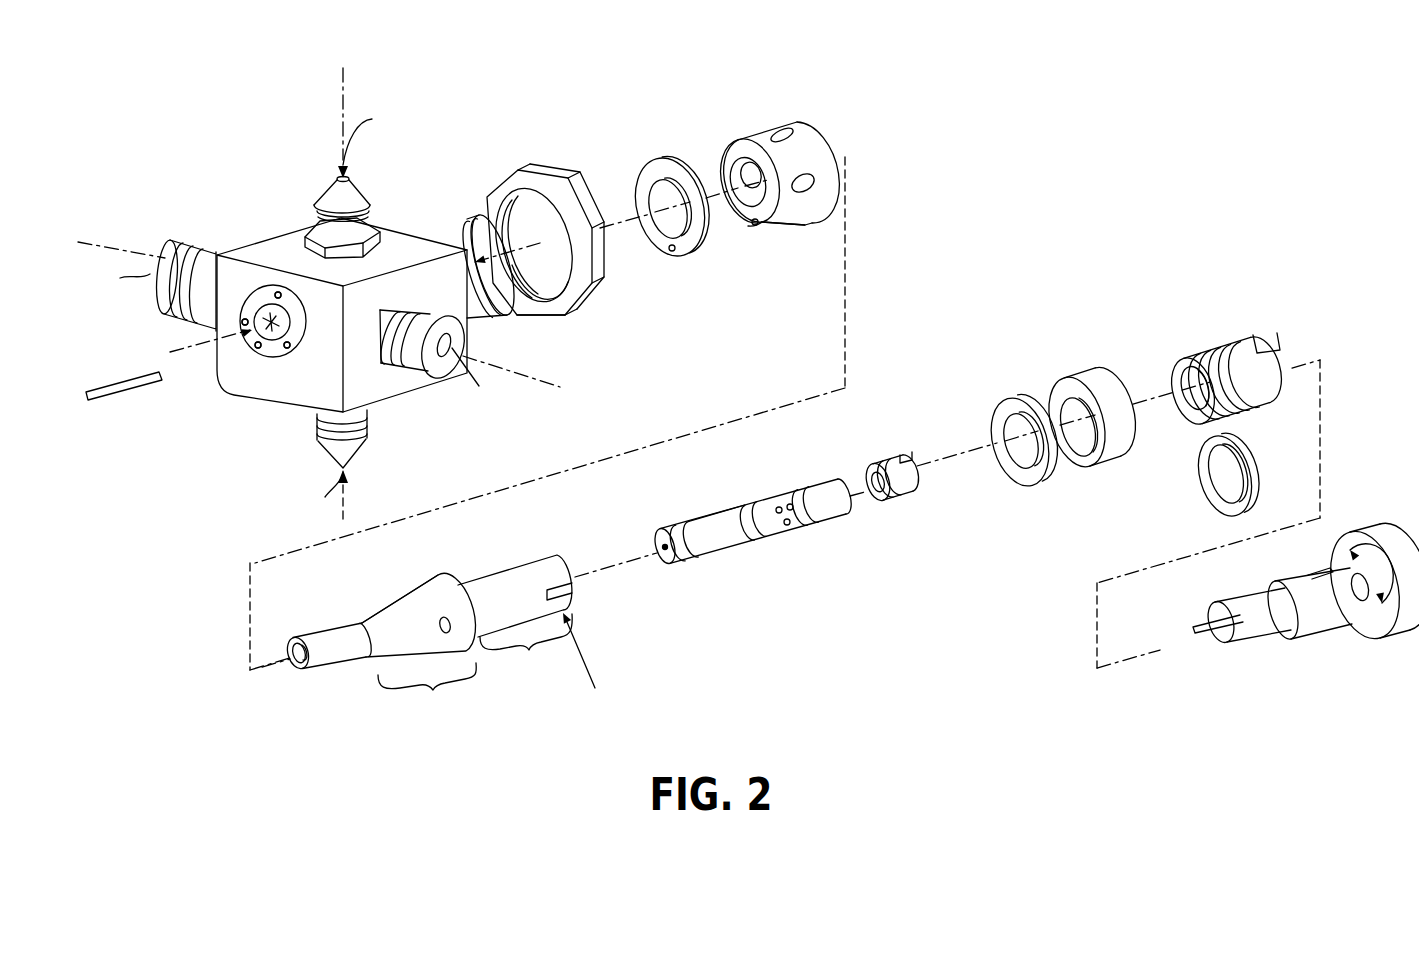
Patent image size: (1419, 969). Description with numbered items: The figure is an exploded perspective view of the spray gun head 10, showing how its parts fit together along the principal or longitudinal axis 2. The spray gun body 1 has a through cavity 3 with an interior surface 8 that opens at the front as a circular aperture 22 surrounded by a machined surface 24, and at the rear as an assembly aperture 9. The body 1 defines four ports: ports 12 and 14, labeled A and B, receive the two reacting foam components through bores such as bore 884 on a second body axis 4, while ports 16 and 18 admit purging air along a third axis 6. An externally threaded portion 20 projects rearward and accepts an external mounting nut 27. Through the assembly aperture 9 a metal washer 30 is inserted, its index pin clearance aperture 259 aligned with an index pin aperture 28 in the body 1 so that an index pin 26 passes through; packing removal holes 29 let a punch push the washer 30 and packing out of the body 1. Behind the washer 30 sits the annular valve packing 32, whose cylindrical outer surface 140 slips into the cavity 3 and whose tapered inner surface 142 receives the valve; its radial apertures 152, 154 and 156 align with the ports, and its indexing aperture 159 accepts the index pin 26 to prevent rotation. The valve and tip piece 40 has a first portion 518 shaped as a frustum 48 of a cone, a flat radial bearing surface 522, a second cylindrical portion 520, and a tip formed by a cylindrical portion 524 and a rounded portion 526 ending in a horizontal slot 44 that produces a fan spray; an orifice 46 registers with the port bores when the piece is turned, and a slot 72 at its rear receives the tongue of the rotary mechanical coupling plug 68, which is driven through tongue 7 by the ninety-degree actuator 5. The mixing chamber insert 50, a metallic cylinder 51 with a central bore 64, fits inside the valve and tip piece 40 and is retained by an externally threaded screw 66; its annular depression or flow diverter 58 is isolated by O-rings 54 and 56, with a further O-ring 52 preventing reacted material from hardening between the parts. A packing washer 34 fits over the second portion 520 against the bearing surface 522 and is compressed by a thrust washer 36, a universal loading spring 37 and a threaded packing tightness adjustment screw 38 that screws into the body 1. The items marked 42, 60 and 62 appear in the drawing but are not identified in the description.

The spray gun body 1 is at (267, 240).
The principal or longitudinal axis 2 is at (217, 360).
The through cavity 3 is at (545, 234).
The second body axis 4 is at (98, 235).
The rotational actuator 5 is at (1371, 532).
The third axis 6 is at (341, 150).
The tongue 7 is at (1330, 565).
The interior surface 8 is at (283, 343).
The assembly aperture 9 is at (559, 318).
The spray gun head 10 is at (692, 715).
The port 12 is at (176, 250).
The port 14 is at (465, 340).
The port 16 is at (360, 194).
The port 18 is at (350, 452).
The externally threaded portion 20 is at (462, 220).
The circular aperture 22 is at (240, 355).
The machined surface 24 is at (257, 304).
The index pin 26 is at (122, 394).
The external mounting nut 27 is at (532, 167).
The index pin aperture 28 is at (270, 368).
The packing removal holes 29 is at (258, 304).
The metal washer 30 is at (657, 162).
The valve packing 32 is at (785, 215).
The packing washer 34 is at (1020, 397).
The thrust washer 36 is at (1107, 457).
The universal loading spring 37 is at (1210, 493).
The threaded packing tightness adjustment screw 38 is at (1235, 353).
The valve and tip piece 40 is at (378, 632).
The nozzle assembly 42 is at (756, 623).
The horizontal slot 44 is at (296, 640).
The orifice 46 is at (448, 632).
The frustum of a cone 48 is at (400, 613).
The mixing chamber insert 50 is at (720, 543).
The metallic cylinder 51 is at (703, 530).
The O-ring 52 is at (677, 523).
The O-ring 54 is at (743, 510).
The O-ring 56 is at (803, 527).
The annular depression 58 is at (789, 484).
The hole 60 is at (793, 523).
The hole 62 is at (777, 507).
The central bore 64 is at (665, 550).
The externally threaded screw 66 is at (907, 497).
The rotary mechanical coupling plug 68 is at (1317, 617).
The slot 72 is at (563, 586).
The outer surface 140 is at (817, 145).
The cylindrical inner surface 142 is at (758, 230).
The radial aperture 152 is at (737, 140).
The radial aperture 154 is at (810, 180).
The radial aperture 156 is at (777, 133).
The indexing aperture 159 is at (758, 226).
The index pin clearance aperture 259 is at (670, 252).
The first portion 518 is at (427, 691).
The second portion 520 is at (526, 642).
The flat radial bearing surface 522 is at (450, 575).
The cylindrical portion 524 is at (340, 660).
The rounded portion 526 is at (290, 660).
The bore 884 is at (441, 366).